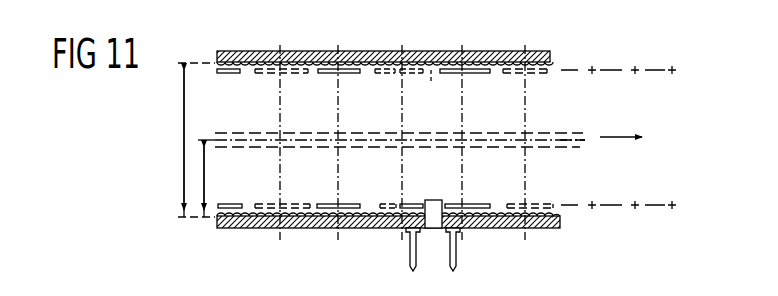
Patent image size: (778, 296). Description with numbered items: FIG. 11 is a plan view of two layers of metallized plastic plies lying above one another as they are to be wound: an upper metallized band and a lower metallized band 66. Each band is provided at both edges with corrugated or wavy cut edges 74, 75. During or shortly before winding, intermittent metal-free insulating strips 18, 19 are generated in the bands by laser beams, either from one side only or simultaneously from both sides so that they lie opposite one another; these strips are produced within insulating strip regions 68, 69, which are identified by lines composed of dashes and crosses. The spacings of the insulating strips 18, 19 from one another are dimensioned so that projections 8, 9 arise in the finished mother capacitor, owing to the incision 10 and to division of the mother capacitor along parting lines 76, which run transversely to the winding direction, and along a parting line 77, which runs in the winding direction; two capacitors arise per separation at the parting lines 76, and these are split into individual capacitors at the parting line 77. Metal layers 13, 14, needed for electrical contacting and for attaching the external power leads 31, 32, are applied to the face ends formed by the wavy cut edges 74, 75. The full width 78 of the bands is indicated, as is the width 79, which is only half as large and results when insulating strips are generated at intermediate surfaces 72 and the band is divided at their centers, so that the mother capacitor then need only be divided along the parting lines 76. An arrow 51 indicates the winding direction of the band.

The projection 8 is at (432, 62).
The projection 9 is at (456, 53).
The incision 10 is at (433, 200).
The metal layer 13 is at (425, 60).
The metal layer 14 is at (468, 62).
The intermittent metal-free insulating strip 18 is at (357, 55).
The intermittent metal-free insulating strip 19 is at (396, 55).
The external power lead 31 is at (410, 262).
The external power lead 32 is at (460, 262).
The direction of movement 51 is at (606, 140).
The lower metallized band 66 is at (330, 82).
The insulating strip region 68 is at (630, 205).
The insulating strip region 69 is at (630, 70).
The intermediate surface 72 is at (386, 133).
The corrugated or wavy cut edge 74 is at (263, 53).
The corrugated or wavy cut edge 75 is at (292, 82).
The parting line 76 is at (403, 50).
The parting line 77 is at (578, 140).
The width of the bands 78 is at (184, 112).
The width 79 is at (204, 175).